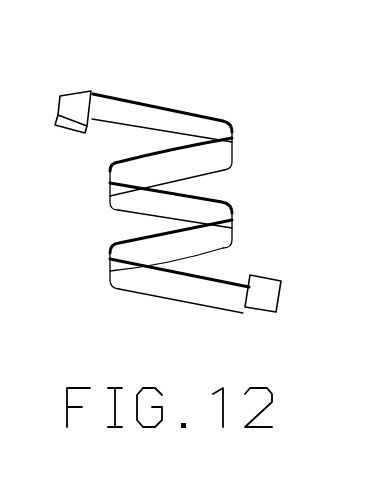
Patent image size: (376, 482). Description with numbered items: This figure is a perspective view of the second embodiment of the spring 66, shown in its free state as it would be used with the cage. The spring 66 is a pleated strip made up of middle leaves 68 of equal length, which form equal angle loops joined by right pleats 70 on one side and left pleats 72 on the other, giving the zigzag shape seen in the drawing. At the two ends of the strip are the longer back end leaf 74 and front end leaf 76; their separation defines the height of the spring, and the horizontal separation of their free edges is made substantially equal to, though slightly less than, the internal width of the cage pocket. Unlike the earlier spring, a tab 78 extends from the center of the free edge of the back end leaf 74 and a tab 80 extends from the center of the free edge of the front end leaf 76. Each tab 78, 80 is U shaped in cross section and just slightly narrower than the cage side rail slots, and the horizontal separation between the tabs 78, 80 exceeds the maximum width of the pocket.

The spring 66 is at (178, 90).
The middle leaves 68 is at (153, 247).
The right pleats 70 is at (110, 188).
The left pleats 72 is at (232, 147).
The back end leaf 74 is at (187, 290).
The front end leaf 76 is at (171, 123).
The tab 78 is at (265, 292).
The tab 80 is at (77, 110).